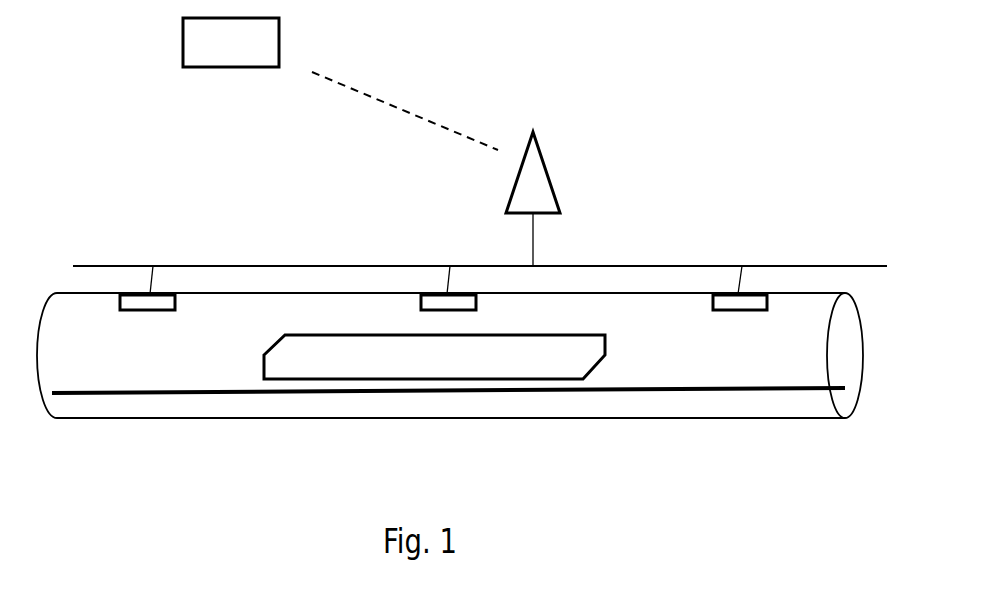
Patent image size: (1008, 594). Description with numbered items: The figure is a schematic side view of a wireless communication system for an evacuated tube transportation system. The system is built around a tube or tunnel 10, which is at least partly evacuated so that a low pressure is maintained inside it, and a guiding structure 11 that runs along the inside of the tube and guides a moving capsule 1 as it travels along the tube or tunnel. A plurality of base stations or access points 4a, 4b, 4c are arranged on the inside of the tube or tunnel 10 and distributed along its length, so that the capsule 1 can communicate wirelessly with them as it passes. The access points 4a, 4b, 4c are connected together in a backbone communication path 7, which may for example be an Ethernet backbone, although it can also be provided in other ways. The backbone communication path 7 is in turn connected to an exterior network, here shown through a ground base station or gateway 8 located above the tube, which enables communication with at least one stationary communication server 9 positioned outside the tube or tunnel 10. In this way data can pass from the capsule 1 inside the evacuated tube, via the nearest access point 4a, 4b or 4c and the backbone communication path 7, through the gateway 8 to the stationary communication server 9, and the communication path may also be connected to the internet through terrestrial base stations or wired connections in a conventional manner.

The moving capsule 1 is at (558, 372).
The base station or access point 4a is at (163, 293).
The base station or access point 4b is at (435, 293).
The base station or access point 4c is at (762, 293).
The backbone communication path 7 is at (697, 266).
The ground base station or gateway 8 is at (557, 197).
The stationary communication server 9 is at (235, 67).
The tube or tunnel 10 is at (258, 418).
The guiding structure 11 is at (192, 395).